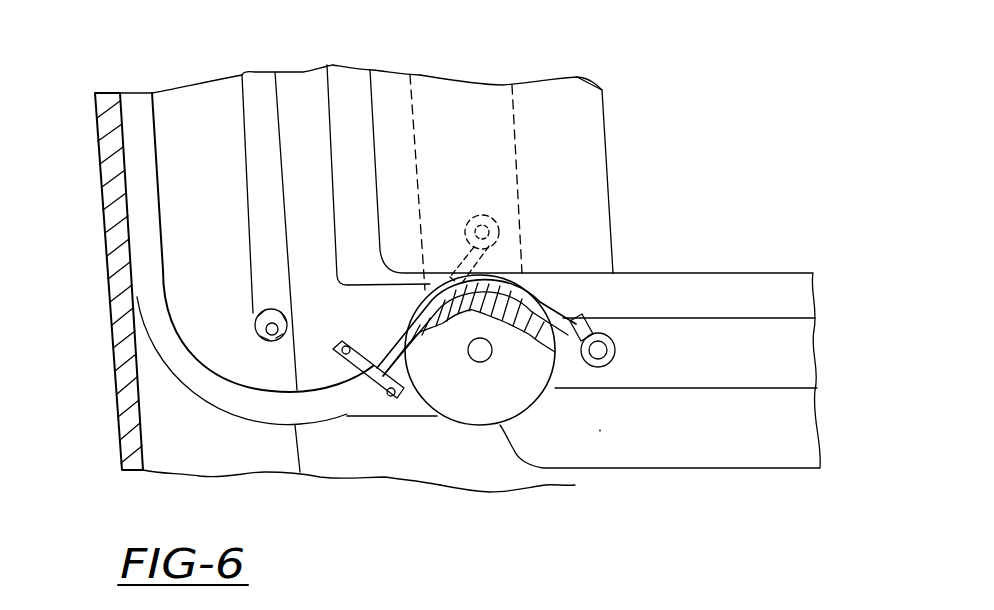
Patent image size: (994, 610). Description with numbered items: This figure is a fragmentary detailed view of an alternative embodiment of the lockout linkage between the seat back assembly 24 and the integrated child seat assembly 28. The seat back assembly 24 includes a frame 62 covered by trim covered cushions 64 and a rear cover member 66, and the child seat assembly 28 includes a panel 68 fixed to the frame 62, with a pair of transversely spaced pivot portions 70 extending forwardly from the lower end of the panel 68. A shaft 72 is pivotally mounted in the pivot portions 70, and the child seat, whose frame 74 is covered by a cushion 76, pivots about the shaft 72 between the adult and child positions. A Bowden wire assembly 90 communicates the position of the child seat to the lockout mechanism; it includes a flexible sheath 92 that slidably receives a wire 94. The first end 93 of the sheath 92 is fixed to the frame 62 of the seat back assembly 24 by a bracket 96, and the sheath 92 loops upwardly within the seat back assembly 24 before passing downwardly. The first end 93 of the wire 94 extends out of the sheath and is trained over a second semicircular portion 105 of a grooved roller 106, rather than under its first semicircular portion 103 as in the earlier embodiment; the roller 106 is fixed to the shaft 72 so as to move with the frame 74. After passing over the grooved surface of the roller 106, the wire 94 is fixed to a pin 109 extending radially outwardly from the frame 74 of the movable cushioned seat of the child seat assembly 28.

The seat back assembly 24 is at (607, 123).
The child seat assembly 28 is at (813, 273).
The frame 62 is at (177, 134).
The trim covered cushions 64 is at (605, 172).
The rear cover member 66 is at (110, 362).
The panel 68 is at (302, 85).
The pivot portions 70 is at (375, 405).
The shaft 72 is at (483, 355).
The frame 74 is at (810, 365).
The cushion 76 is at (730, 453).
The Bowden wire assembly 90 is at (190, 376).
The flexible sheath 92 is at (265, 252).
The first end 93 is at (405, 308).
The wire 94 is at (560, 280).
The bracket 96 is at (345, 347).
The first semicircular portion 103 is at (530, 395).
The second semicircular portion 105 is at (457, 280).
The grooved roller 106 is at (448, 407).
The pin 109 is at (480, 217).